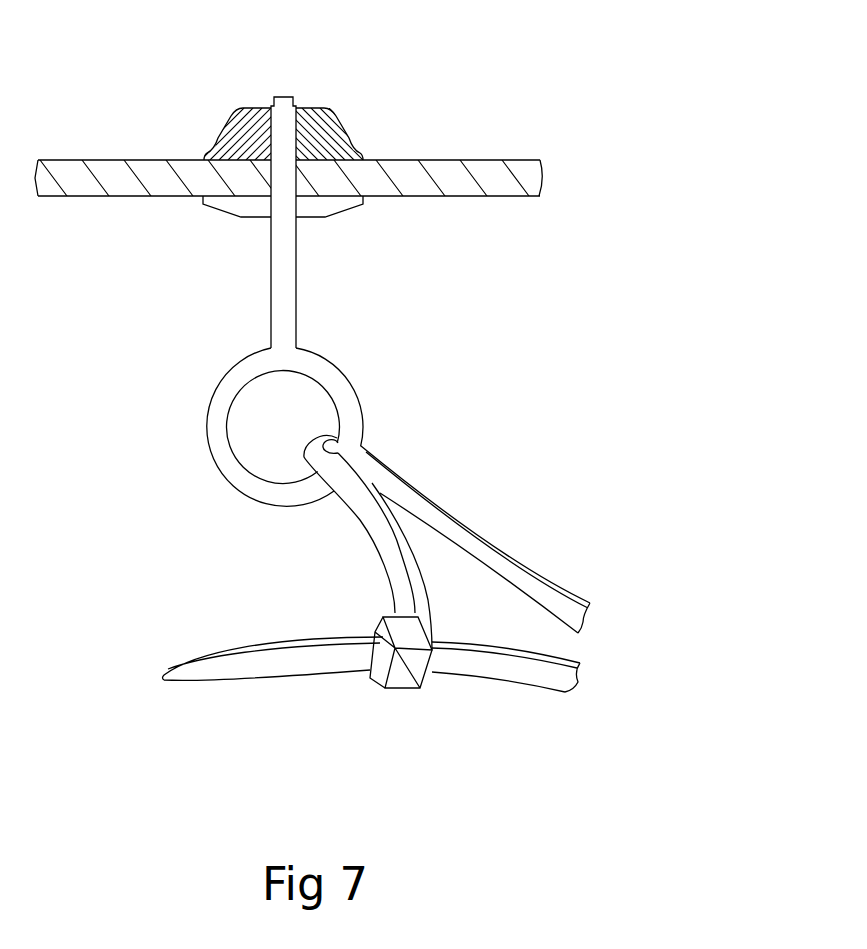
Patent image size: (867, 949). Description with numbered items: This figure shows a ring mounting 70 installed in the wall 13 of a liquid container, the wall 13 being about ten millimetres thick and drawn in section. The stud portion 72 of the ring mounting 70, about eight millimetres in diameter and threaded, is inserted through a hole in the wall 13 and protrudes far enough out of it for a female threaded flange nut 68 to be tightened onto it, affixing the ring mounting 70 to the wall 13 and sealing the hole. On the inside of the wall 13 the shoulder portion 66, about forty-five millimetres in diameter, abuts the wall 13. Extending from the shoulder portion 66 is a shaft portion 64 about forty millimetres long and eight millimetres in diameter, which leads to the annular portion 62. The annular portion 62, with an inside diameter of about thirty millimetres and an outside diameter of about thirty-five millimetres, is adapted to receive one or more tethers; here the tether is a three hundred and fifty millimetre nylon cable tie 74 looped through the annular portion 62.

The wall 13 is at (475, 196).
The annular portion 62 is at (223, 465).
The shaft portion 64 is at (297, 287).
The shoulder portion 66 is at (242, 207).
The female threaded flange nut 68 is at (337, 123).
The ring mounting 70 is at (182, 338).
The stud portion 72 is at (282, 123).
The nylon cable tie 74 is at (460, 665).